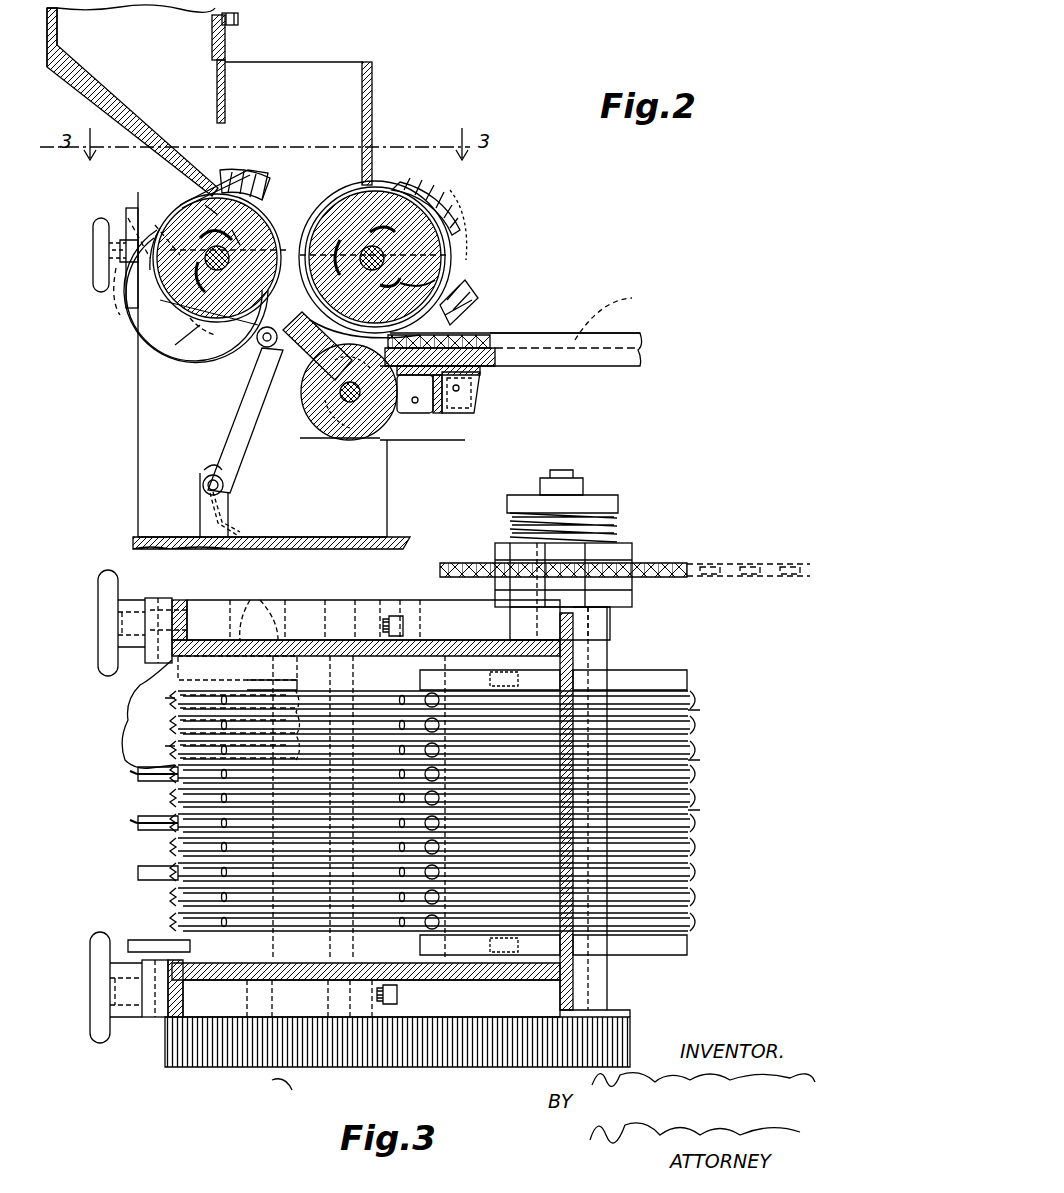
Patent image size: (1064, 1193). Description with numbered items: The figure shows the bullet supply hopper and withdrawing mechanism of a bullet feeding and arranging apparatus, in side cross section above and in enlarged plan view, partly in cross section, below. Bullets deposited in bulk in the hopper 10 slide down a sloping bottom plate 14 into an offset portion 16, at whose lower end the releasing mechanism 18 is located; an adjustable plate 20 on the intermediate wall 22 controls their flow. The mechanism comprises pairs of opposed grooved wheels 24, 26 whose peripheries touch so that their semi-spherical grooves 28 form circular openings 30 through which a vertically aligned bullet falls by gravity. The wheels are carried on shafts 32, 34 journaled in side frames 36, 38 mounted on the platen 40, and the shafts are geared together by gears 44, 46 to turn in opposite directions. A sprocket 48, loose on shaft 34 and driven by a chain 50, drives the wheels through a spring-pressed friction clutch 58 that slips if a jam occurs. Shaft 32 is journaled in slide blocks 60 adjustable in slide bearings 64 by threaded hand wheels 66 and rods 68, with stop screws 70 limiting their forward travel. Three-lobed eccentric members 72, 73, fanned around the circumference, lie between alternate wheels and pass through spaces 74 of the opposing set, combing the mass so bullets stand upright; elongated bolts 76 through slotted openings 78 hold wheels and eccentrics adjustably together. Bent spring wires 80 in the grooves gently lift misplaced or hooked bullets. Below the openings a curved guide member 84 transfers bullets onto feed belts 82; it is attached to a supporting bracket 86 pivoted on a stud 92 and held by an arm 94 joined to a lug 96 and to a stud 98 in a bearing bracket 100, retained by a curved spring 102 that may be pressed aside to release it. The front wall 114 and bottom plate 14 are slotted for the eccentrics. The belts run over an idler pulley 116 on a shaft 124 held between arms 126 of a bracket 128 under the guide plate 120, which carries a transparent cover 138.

In FIG. 2, the hopper 10 is at (140, 38).
In FIG. 2, the sloping bottom plate 14 is at (130, 110).
In FIG. 3, the sloping bottom plate 14 is at (125, 716).
In FIG. 2, the offset portion 16 is at (330, 72).
In FIG. 2, the bullet feeding or releasing mechanism 18 is at (296, 185).
In FIG. 2, the adjustable plate 20 is at (225, 82).
In FIG. 2, the intermediate wall 22 is at (212, 45).
In FIG. 2, the grooved wheels 24 is at (170, 245).
In FIG. 3, the grooved wheels 24 is at (140, 863).
In FIG. 2, the grooved wheels 26 is at (448, 225).
In FIG. 3, the grooved wheels 26 is at (710, 795).
In FIG. 3, the semi-spherical grooves 28 is at (165, 901).
In FIG. 3, the circular opening 30 is at (432, 693).
In FIG. 2, the shaft 32 is at (205, 335).
In FIG. 3, the shaft 32 is at (262, 600).
In FIG. 2, the shaft 34 is at (430, 260).
In FIG. 3, the shaft 34 is at (590, 636).
In FIG. 3, the side frame 36 is at (366, 990).
In FIG. 2, the side frame 38 is at (388, 503).
In FIG. 3, the side frame 38 is at (338, 605).
In FIG. 2, the platen 40 is at (398, 537).
In FIG. 3, the gear 44 is at (280, 1067).
In FIG. 3, the gear 46 is at (520, 1067).
In FIG. 3, the sprocket 48 is at (660, 565).
In FIG. 3, the chain 50 is at (725, 562).
In FIG. 3, the spring-pressed friction clutch unit 58 is at (632, 518).
In FIG. 2, the slide blocks 60 is at (145, 200).
In FIG. 3, the slide blocks 60 is at (232, 580).
In FIG. 2, the slide bearings 64 is at (128, 240).
In FIG. 2, the threaded hand wheels 66 is at (92, 230).
In FIG. 3, the threaded hand wheels 66 is at (98, 590).
In FIG. 2, the rods 68 is at (115, 295).
In FIG. 3, the rods 68 is at (205, 600).
In FIG. 3, the stop screws 70 is at (403, 620).
In FIG. 2, the eccentric members 72 is at (255, 170).
In FIG. 3, the eccentric members 72 is at (145, 772).
In FIG. 2, the eccentric members 73 is at (450, 195).
In FIG. 3, the eccentric members 73 is at (700, 717).
In FIG. 3, the spaces 74 is at (448, 845).
In FIG. 2, the elongated bolts 76 is at (420, 330).
In FIG. 3, the elongated bolts 76 is at (478, 700).
In FIG. 2, the slotted openings 78 is at (436, 284).
In FIG. 2, the spring wire members 80 is at (212, 205).
In FIG. 3, the spring wire members 80 is at (440, 800).
In FIG. 2, the feed belts 82 is at (616, 313).
In FIG. 2, the guide member 84 is at (452, 312).
In FIG. 2, the supporting bracket 86 is at (290, 350).
In FIG. 2, the stud 92 is at (300, 412).
In FIG. 2, the arm 94 is at (225, 418).
In FIG. 2, the lug 96 is at (270, 348).
In FIG. 2, the stud 98 is at (203, 483).
In FIG. 2, the bearing bracket 100 is at (208, 510).
In FIG. 2, the curved spring member 102 is at (225, 508).
In FIG. 2, the front wall 114 is at (372, 112).
In FIG. 2, the idler pulley 116 is at (325, 440).
In FIG. 2, the guide plate 120 is at (608, 365).
In FIG. 2, the shaft 124 is at (400, 440).
In FIG. 2, the arms 126 is at (408, 413).
In FIG. 2, the bracket 128 is at (478, 395).
In FIG. 2, the transparent top or cover 138 is at (600, 333).